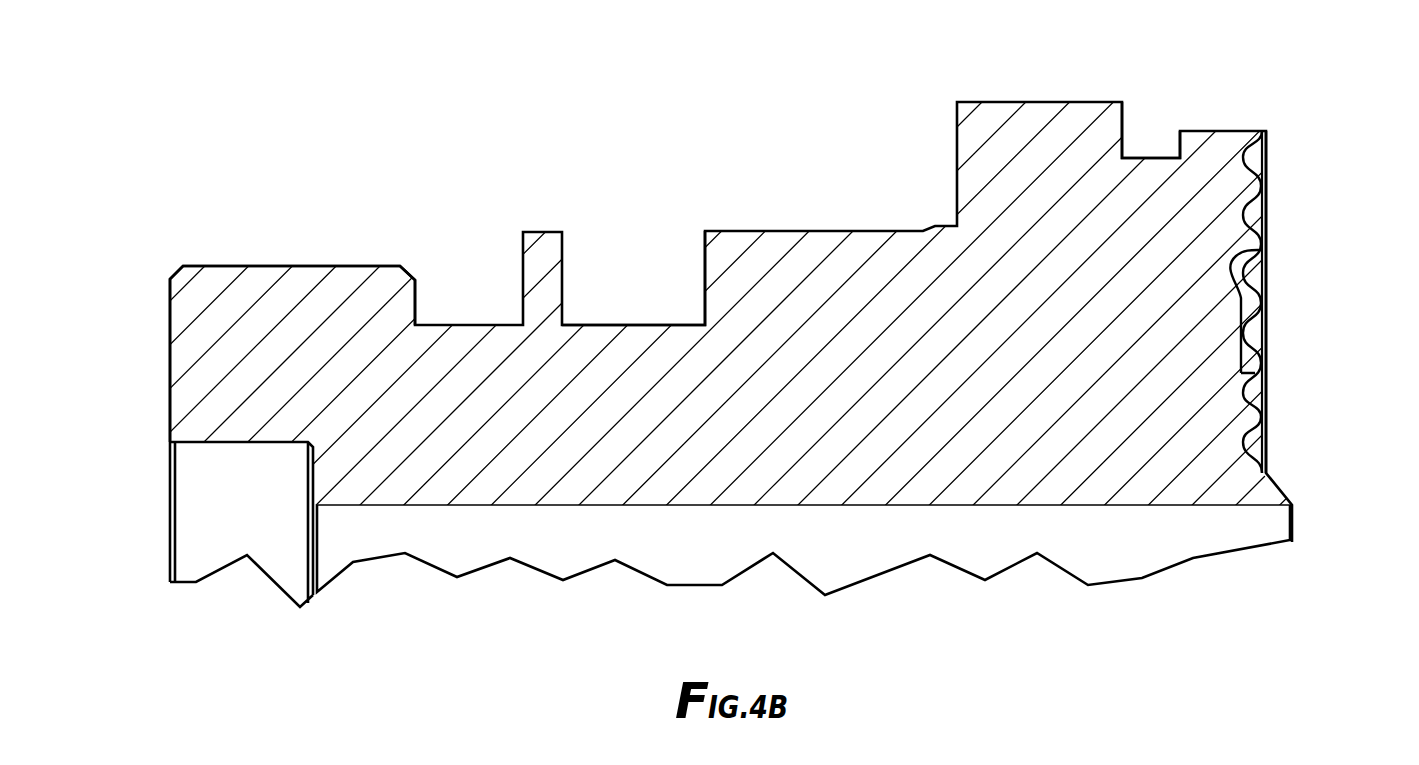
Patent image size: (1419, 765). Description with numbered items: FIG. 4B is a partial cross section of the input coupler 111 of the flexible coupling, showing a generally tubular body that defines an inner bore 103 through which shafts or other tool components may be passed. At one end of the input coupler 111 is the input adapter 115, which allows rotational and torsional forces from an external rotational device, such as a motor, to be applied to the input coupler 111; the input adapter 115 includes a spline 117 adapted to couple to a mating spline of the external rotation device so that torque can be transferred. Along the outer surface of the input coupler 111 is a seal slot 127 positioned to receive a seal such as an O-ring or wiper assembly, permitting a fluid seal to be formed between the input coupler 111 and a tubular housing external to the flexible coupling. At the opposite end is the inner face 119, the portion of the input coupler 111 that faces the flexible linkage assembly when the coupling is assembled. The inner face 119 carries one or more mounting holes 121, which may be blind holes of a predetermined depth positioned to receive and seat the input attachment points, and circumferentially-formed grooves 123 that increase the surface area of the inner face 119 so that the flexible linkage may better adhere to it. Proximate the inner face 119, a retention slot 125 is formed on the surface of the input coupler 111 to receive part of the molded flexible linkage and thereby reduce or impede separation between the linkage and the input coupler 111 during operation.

The input coupler 111 is at (175, 133).
The input adapter 115 is at (143, 362).
The inner bore 103 is at (712, 553).
The spline 117 is at (280, 265).
The seal slot 127 is at (620, 267).
The retention slot 125 is at (1152, 142).
The grooves 123 is at (1252, 215).
The mounting holes 121 is at (1252, 250).
The inner face 119 is at (1282, 303).